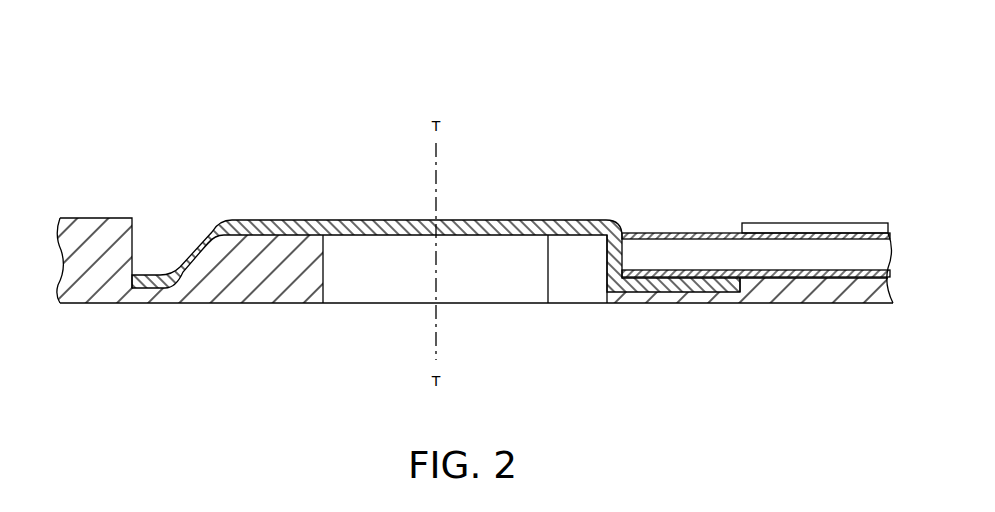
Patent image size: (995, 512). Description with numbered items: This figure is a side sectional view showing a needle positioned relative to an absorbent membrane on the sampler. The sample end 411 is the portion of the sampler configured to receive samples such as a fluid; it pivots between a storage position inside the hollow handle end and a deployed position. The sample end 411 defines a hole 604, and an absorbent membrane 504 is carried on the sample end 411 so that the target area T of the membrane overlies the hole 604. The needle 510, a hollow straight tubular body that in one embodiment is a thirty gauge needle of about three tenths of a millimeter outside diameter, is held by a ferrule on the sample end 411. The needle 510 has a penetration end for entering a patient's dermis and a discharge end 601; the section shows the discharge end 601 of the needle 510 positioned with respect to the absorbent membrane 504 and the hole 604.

The sample end 411 is at (92, 240).
The absorbent membrane 504 is at (352, 223).
The discharge end 601 is at (622, 237).
The needle 510 is at (793, 237).
The hole 604 is at (323, 290).